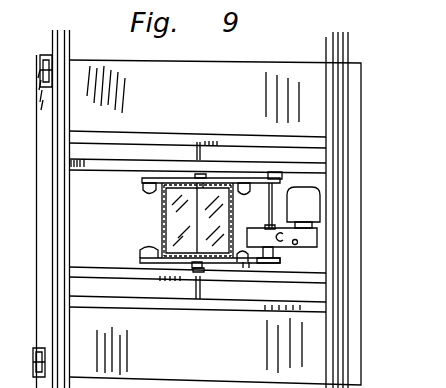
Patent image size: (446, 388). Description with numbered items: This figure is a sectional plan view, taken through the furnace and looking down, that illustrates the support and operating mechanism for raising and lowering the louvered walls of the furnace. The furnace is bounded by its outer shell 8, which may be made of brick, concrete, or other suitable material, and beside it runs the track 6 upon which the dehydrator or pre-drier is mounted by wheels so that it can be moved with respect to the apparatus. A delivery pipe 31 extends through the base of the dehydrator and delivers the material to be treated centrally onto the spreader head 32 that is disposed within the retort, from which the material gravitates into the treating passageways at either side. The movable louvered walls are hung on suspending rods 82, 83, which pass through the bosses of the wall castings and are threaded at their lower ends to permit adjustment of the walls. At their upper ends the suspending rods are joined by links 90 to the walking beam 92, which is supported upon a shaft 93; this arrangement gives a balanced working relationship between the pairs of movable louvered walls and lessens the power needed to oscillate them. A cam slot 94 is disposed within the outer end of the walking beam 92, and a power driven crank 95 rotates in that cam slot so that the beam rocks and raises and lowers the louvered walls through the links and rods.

The track 6 is at (338, 52).
The outer shell 8 is at (243, 72).
The delivery pipe 31 is at (175, 256).
The spreader head 32 is at (185, 216).
The suspending rod 82 is at (147, 192).
The suspending rod 83 is at (147, 252).
The link 90 is at (143, 186).
The walking beam 92 is at (197, 186).
The shaft 93 is at (200, 173).
The cam slot 94 is at (273, 177).
The power driven crank 95 is at (268, 210).